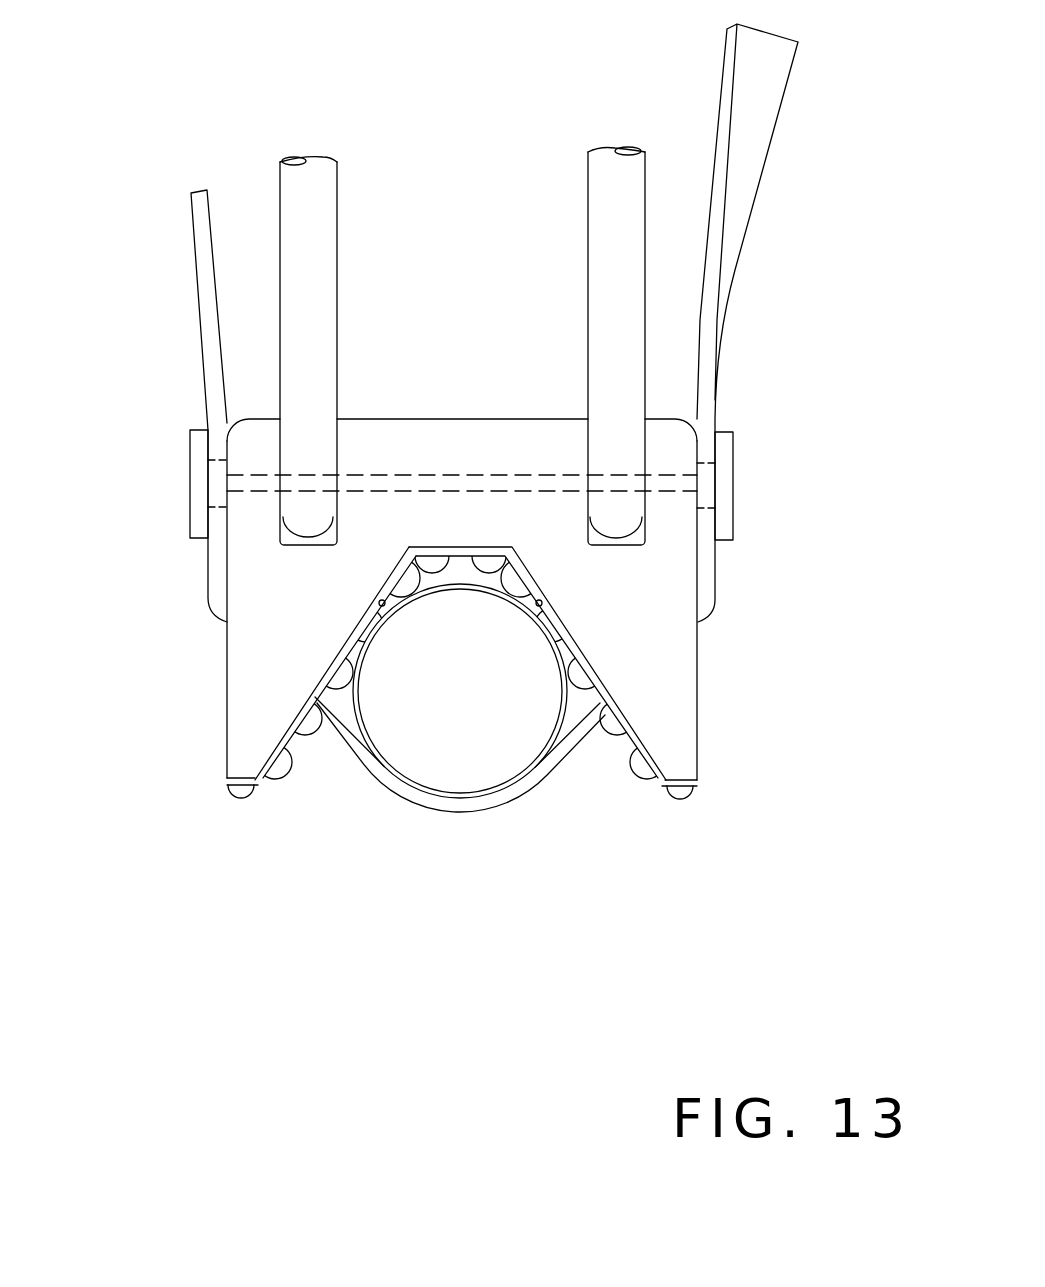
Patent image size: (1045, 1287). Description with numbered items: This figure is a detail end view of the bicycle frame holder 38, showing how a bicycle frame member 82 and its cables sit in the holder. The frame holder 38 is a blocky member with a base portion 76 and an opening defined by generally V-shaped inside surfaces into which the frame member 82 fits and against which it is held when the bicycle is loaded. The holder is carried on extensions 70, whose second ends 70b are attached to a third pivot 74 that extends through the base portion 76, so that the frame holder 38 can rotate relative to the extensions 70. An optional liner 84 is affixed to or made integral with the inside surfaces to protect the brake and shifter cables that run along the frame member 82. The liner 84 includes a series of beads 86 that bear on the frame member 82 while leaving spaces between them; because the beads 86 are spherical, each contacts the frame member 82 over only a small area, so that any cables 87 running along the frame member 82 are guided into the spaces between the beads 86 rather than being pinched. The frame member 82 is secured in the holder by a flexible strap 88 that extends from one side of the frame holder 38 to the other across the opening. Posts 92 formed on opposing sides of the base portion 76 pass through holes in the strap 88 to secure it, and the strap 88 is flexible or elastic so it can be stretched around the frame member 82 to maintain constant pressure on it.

The bicycle frame holder 38 is at (158, 614).
The extensions 70 is at (600, 263).
The second ends of extensions 70b is at (327, 502).
The third pivot 74 is at (453, 483).
The base portion 76 is at (664, 598).
The bicycle frame member 82 is at (597, 688).
The liner 84 is at (320, 689).
The beads 86 is at (488, 560).
The cables 87 is at (380, 602).
The flexible strap 88 is at (213, 321).
The posts 92 is at (732, 497).